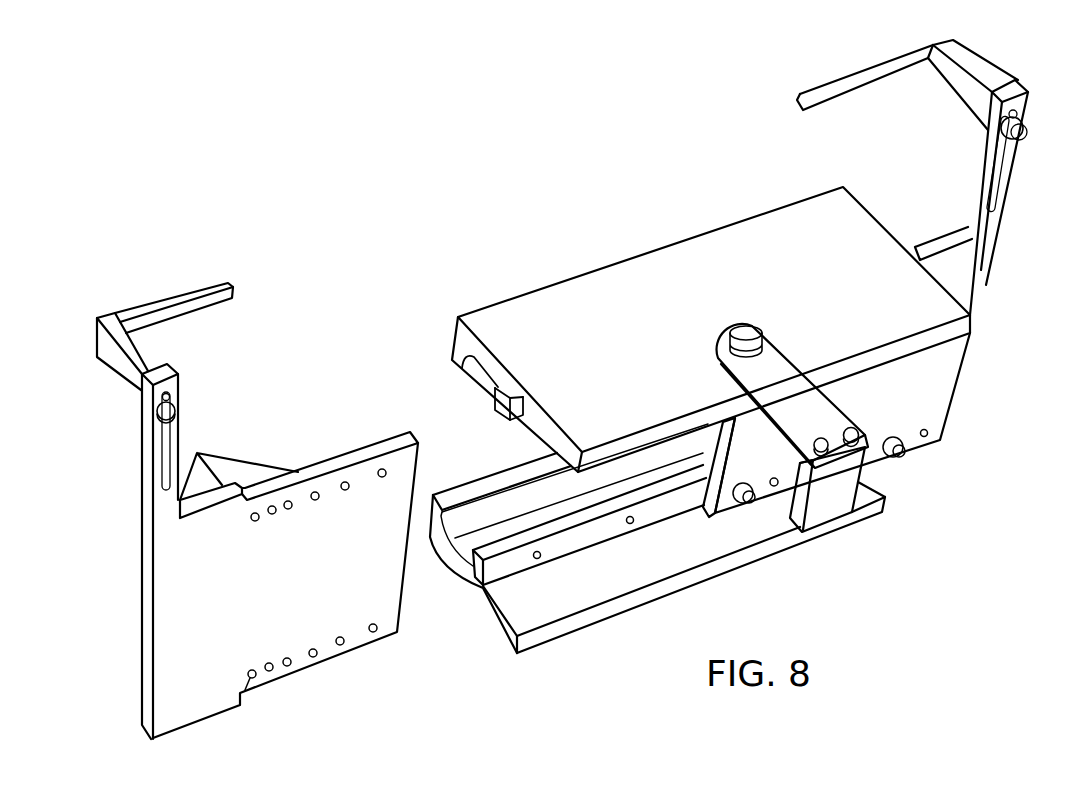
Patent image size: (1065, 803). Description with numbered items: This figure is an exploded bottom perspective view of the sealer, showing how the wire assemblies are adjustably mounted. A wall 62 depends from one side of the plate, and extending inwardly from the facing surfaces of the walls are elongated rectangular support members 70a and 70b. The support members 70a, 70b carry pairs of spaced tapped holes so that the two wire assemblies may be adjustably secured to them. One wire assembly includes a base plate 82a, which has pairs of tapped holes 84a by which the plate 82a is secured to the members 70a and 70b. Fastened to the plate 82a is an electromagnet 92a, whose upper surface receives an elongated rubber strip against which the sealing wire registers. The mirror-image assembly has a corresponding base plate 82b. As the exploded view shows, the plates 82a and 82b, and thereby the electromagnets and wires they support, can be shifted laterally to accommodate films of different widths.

The wall 62 is at (652, 323).
The support member 70a is at (495, 410).
The support member 70b is at (478, 567).
The base plate 82a is at (313, 603).
The base plate 82b is at (968, 288).
The tapped holes 84a is at (372, 634).
The electromagnet 92a is at (247, 465).